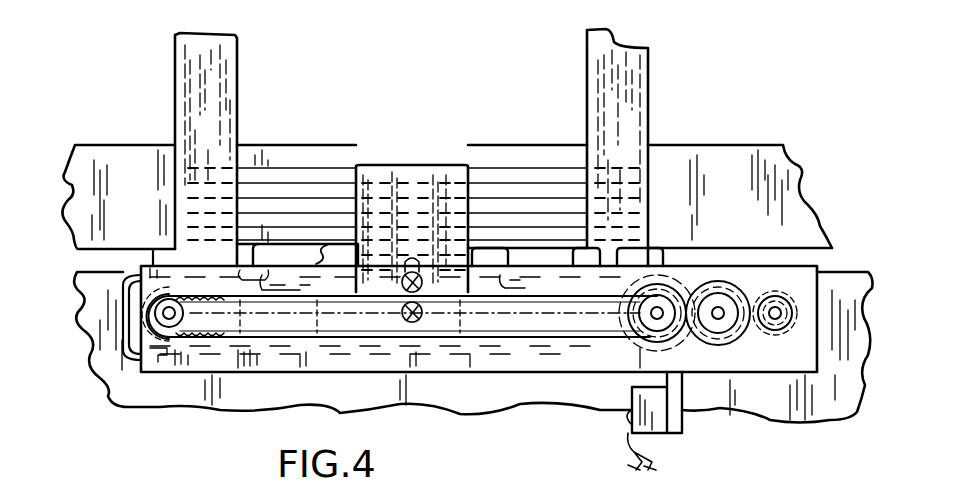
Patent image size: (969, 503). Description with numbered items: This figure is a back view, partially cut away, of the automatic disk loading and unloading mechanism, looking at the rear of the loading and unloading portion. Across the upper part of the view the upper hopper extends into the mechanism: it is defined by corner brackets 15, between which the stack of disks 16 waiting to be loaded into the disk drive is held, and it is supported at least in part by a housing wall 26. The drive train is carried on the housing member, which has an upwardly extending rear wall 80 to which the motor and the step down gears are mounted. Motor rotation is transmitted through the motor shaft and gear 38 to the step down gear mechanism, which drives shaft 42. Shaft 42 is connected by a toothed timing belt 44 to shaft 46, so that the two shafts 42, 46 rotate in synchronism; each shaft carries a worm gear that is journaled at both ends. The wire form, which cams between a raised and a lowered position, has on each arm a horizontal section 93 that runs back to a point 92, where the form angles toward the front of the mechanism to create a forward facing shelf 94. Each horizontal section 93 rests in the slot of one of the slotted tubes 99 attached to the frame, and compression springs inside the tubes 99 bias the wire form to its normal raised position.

The corner brackets 15 is at (223, 78).
The disks 16 is at (522, 177).
The housing wall 26 is at (423, 175).
The forward facing shelf 94 is at (320, 246).
The point 92 is at (313, 255).
The horizontal section 93 is at (527, 274).
The shaft 46 is at (169, 307).
The slotted tubes 99 is at (273, 312).
The toothed timing belt 44 is at (297, 340).
The shaft 42 is at (652, 318).
The gear 38 is at (775, 327).
The rear wall 80 is at (744, 262).